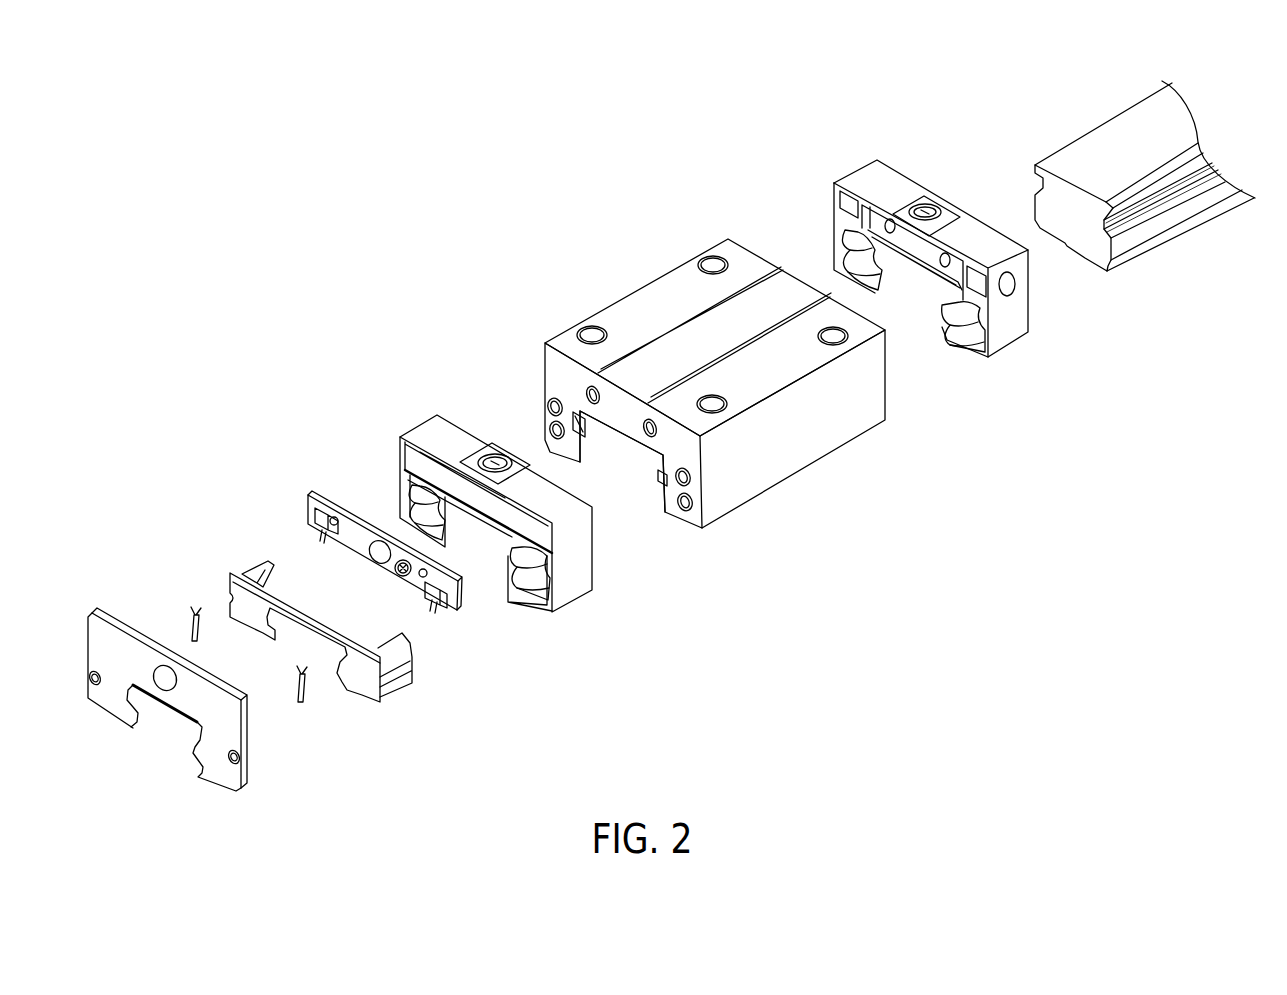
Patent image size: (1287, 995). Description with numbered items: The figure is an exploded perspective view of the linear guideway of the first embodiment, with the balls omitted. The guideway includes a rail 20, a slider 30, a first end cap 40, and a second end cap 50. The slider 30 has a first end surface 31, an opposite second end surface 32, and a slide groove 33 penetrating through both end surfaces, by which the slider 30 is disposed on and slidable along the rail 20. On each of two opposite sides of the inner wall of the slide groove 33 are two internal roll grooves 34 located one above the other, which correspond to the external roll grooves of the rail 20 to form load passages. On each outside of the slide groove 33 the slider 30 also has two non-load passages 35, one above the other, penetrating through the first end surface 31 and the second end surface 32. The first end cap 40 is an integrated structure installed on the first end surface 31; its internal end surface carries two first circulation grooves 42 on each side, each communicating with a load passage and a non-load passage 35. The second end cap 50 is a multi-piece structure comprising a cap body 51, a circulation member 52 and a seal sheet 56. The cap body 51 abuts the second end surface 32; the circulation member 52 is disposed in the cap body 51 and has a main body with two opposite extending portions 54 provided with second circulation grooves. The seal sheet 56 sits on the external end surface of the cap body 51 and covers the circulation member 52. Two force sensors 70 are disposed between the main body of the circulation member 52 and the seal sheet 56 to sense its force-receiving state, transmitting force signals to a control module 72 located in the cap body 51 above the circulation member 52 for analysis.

The rail 20 is at (1058, 133).
The slider 30 is at (653, 394).
The first end surface 31 is at (752, 250).
The second end surface 32 is at (575, 373).
The slide groove 33 is at (623, 478).
The internal roll grooves 34 is at (555, 402).
The non-load passages 35 is at (555, 432).
The first end cap 40 is at (944, 232).
The first circulation grooves 42 is at (848, 264).
The second end cap 50 is at (102, 507).
The cap body 51 is at (364, 430).
The circulation member 52 is at (214, 525).
The extending portions 54 is at (258, 575).
The seal sheet 56 is at (108, 630).
The force sensors 70 is at (198, 637).
The control module 72 is at (476, 626).